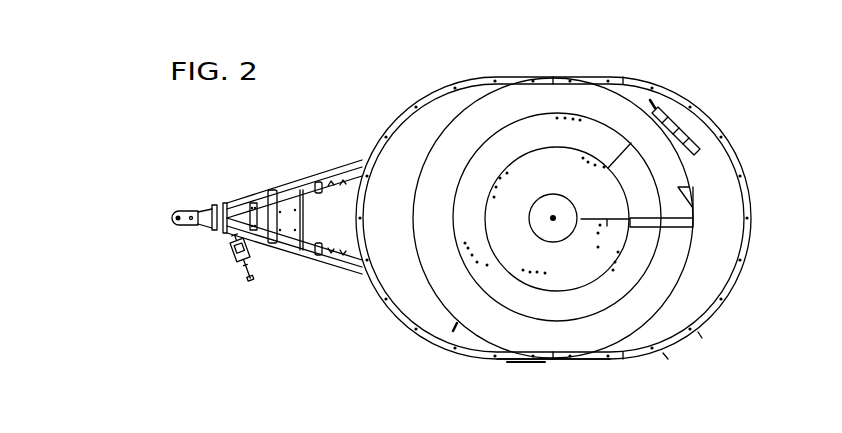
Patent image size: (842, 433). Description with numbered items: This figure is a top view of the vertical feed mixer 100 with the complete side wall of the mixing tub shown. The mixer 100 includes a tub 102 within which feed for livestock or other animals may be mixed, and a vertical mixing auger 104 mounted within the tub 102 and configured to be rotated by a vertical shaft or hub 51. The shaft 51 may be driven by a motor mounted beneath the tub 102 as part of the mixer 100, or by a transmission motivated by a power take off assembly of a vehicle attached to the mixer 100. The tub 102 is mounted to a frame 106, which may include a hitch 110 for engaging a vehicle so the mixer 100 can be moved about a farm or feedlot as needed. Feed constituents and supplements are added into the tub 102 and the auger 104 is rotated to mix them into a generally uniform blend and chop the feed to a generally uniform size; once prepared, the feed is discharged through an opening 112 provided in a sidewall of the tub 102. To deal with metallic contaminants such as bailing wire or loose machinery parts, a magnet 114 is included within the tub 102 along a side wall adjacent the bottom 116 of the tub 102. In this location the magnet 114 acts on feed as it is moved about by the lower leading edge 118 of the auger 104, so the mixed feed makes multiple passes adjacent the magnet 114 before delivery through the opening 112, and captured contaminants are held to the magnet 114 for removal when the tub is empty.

The vertical feed mixer 100 is at (405, 82).
The tub 102 is at (718, 213).
The vertical mixing auger 104 is at (558, 168).
The frame 106 is at (297, 183).
The hitch 110 is at (187, 226).
The opening 112 is at (570, 362).
The magnet 114 is at (668, 120).
The bottom 116 is at (536, 329).
The lower leading edge 118 is at (660, 225).
The vertical shaft 51 is at (562, 222).